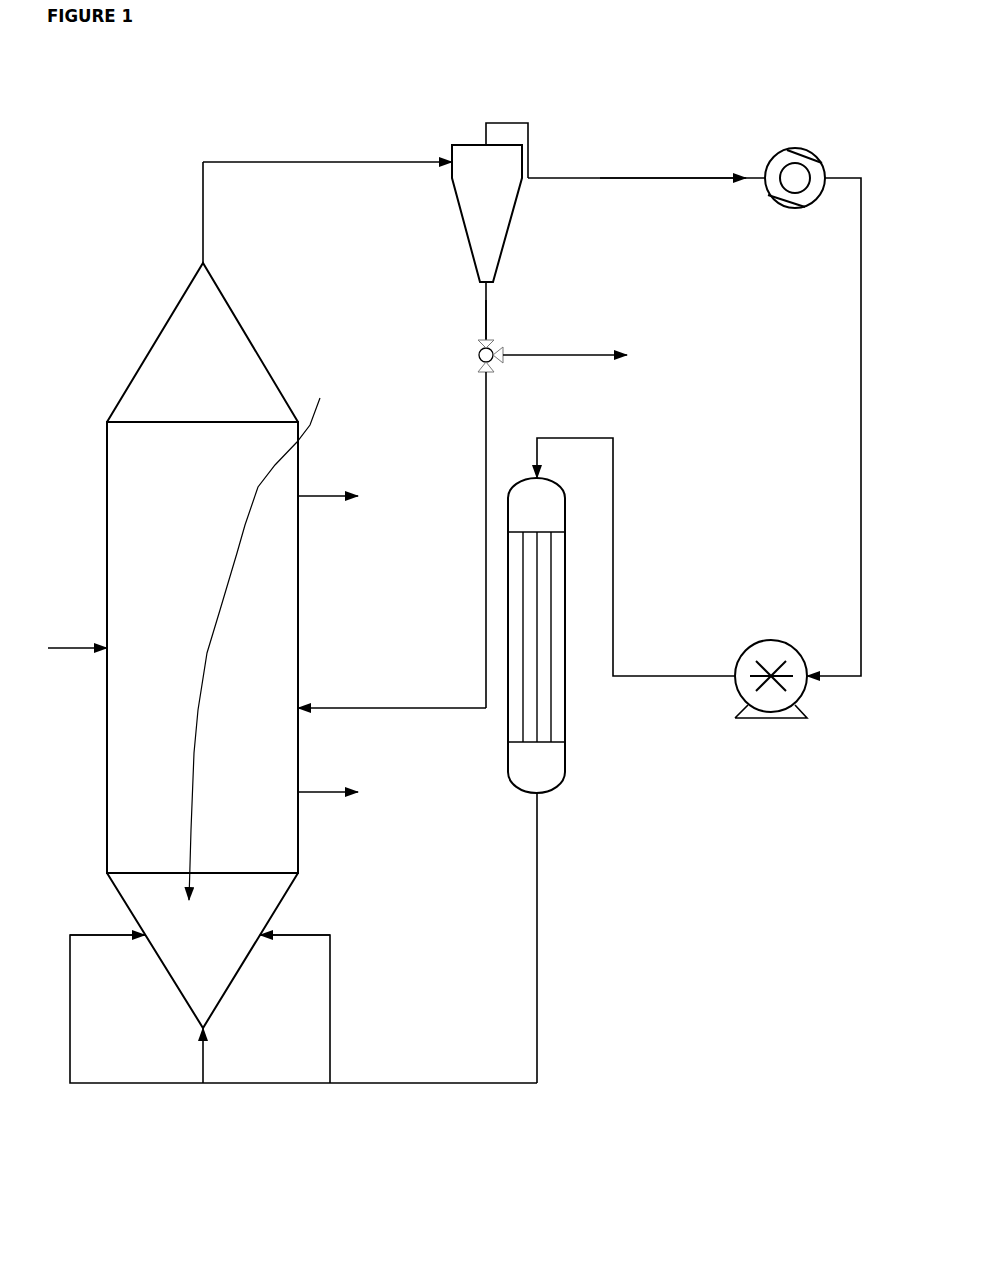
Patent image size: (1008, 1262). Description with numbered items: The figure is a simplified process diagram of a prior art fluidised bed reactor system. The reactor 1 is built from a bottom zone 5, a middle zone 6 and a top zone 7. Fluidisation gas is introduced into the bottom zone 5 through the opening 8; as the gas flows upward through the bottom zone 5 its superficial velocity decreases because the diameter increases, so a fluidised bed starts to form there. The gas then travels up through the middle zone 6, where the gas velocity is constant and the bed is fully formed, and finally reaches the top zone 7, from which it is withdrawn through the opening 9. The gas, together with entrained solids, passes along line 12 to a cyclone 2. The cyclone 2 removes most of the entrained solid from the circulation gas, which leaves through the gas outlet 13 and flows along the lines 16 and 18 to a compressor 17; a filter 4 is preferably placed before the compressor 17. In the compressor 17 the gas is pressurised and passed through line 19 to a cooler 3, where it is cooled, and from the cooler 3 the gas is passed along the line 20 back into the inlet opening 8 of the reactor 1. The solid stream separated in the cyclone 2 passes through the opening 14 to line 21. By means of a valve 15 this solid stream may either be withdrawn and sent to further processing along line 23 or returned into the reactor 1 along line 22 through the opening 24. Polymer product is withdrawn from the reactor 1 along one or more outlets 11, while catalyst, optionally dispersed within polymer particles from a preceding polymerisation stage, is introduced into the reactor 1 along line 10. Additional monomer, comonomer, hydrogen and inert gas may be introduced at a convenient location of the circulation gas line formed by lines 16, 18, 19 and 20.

The reactor 1 is at (262, 406).
The cyclone 2 is at (470, 156).
The cooler 3 is at (545, 688).
The filter 4 is at (800, 148).
The bottom zone 5 is at (232, 953).
The middle zone 6 is at (283, 557).
The top zone 7 is at (152, 390).
The opening 8 is at (140, 925).
The opening 9 is at (207, 262).
The line 10 is at (77, 634).
The outlets 11 is at (311, 493).
The line 12 is at (270, 160).
The gas outlet 13 is at (485, 135).
The opening 14 is at (483, 287).
The valve 15 is at (496, 341).
The line 16 is at (567, 176).
The compressor 17 is at (790, 682).
The line 18 is at (858, 325).
The line 19 is at (651, 680).
The line 20 is at (541, 910).
The line 21 is at (485, 313).
The line 22 is at (483, 497).
The line 23 is at (553, 353).
The opening 24 is at (302, 705).